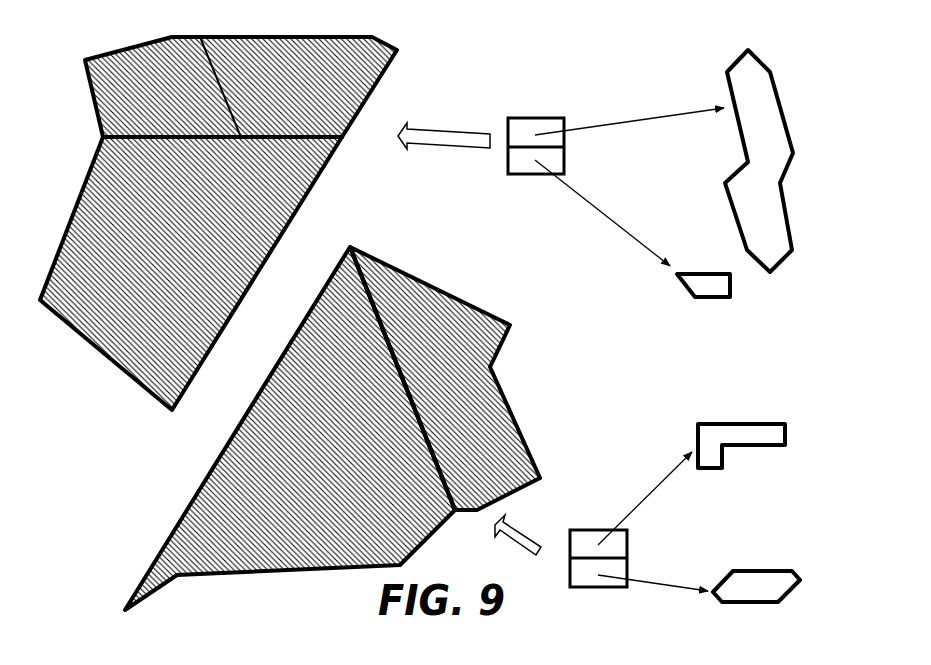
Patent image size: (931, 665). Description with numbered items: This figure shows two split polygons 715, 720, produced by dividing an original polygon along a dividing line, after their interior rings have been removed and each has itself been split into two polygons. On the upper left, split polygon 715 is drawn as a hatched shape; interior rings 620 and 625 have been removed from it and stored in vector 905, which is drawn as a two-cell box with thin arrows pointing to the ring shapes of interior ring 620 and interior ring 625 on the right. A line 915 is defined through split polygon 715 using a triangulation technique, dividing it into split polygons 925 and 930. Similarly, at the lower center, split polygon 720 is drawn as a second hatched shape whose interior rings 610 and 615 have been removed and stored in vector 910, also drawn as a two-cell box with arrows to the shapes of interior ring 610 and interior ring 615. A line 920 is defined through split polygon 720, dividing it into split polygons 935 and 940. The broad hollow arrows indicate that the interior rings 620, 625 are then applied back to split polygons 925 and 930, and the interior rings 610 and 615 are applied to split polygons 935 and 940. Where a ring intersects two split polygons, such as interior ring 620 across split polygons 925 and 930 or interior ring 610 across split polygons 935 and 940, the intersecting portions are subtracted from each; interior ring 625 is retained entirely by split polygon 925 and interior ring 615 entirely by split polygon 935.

The split polygon 715 is at (264, 205).
The line 915 is at (210, 40).
The split polygon 925 is at (388, 68).
The split polygon 930 is at (318, 178).
The split polygon 720 is at (352, 402).
The vector 905 is at (528, 174).
The interior ring 620 is at (727, 72).
The interior ring 625 is at (713, 297).
The line 920 is at (390, 347).
The split polygon 940 is at (507, 402).
The split polygon 935 is at (190, 497).
The vector 910 is at (585, 530).
The interior ring 610 is at (742, 424).
The interior ring 615 is at (740, 571).